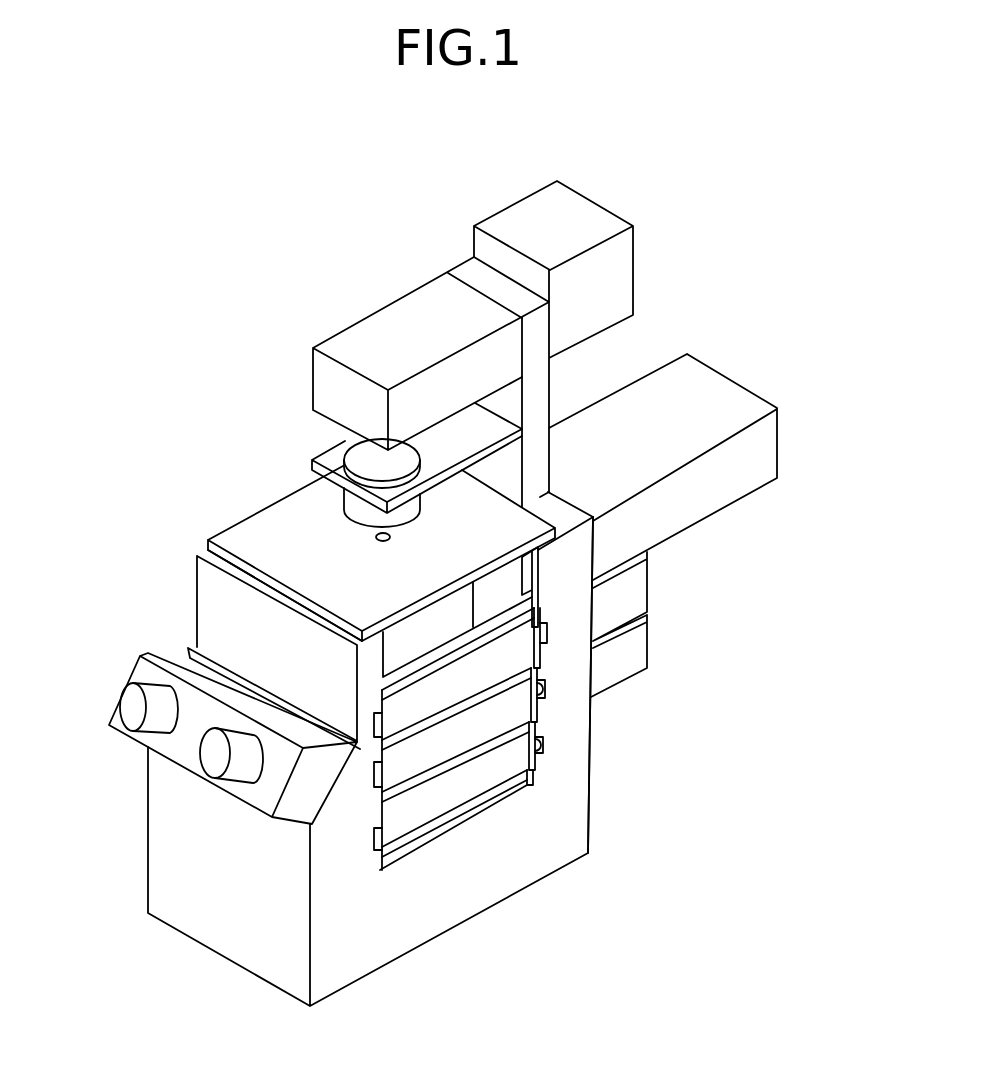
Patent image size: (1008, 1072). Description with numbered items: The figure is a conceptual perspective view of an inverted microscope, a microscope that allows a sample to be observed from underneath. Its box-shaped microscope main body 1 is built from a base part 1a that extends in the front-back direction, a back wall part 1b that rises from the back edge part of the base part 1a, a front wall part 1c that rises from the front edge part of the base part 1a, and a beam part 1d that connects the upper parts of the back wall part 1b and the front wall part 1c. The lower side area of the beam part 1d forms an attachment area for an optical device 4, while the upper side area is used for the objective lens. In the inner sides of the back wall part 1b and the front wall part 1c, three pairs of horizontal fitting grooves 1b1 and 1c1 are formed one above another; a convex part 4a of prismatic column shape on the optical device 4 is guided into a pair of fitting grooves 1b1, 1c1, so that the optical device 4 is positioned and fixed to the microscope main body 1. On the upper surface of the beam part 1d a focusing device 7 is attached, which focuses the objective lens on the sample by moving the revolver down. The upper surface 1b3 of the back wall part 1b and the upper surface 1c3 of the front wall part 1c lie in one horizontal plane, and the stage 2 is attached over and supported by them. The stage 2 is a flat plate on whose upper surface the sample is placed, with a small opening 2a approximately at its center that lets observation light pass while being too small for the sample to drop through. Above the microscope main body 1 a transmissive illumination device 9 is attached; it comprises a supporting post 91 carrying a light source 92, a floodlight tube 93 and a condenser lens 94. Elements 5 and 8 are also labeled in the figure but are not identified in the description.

The microscope main body 1 is at (399, 709).
The base part 1a is at (452, 920).
The back wall part 1b is at (591, 670).
The fitting grooves 1b1 is at (548, 748).
The upper surface of the back wall part 1b3 is at (555, 510).
The front wall part 1c is at (347, 842).
The fitting grooves 1c1 is at (378, 757).
The upper surface of the front wall part 1c3 is at (285, 595).
The beam part 1d is at (433, 657).
The stage 2 is at (381, 543).
The opening 2a is at (386, 545).
The optical device 4 is at (534, 719).
The convex part 4a is at (545, 745).
The cartridges 5 is at (765, 445).
The focusing device 7 is at (500, 590).
The operation panel 8 is at (252, 793).
The transmissive illumination device 9 is at (466, 323).
The supporting post 91 is at (540, 398).
The light source 92 is at (520, 212).
The floodlight tube 93 is at (372, 330).
The condenser lens 94 is at (350, 453).